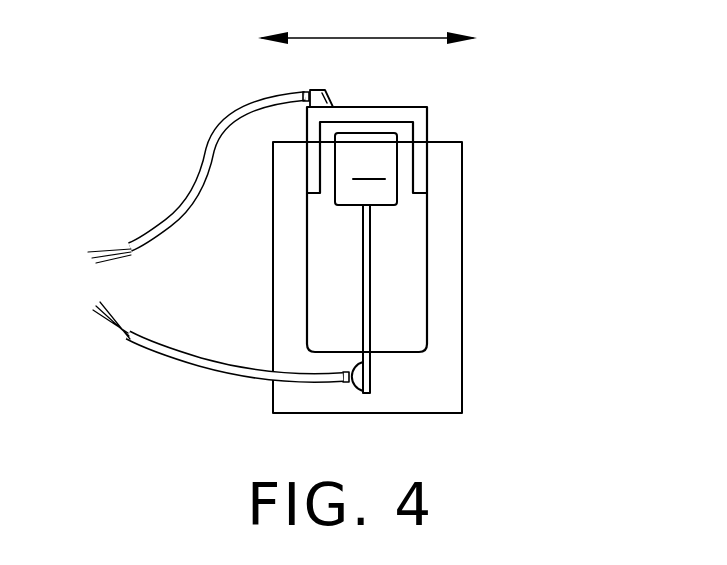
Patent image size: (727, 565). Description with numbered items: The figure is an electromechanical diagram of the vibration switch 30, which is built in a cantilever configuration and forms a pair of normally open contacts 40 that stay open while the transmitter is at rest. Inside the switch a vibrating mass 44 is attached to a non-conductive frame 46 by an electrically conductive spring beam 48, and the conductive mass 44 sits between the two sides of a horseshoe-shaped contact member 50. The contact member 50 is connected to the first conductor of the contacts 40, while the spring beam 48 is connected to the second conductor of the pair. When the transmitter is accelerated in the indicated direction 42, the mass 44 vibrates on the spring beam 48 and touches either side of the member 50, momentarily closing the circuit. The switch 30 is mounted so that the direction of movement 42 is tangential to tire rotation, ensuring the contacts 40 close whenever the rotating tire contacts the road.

The vibration switch 30 is at (488, 321).
The normally open contacts 40 is at (172, 197).
The direction of acceleration 42 is at (367, 25).
The vibrating mass 44 is at (366, 169).
The non-conductive frame 46 is at (407, 382).
The spring beam 48 is at (380, 290).
The horseshoe-shaped contact member 50 is at (437, 126).